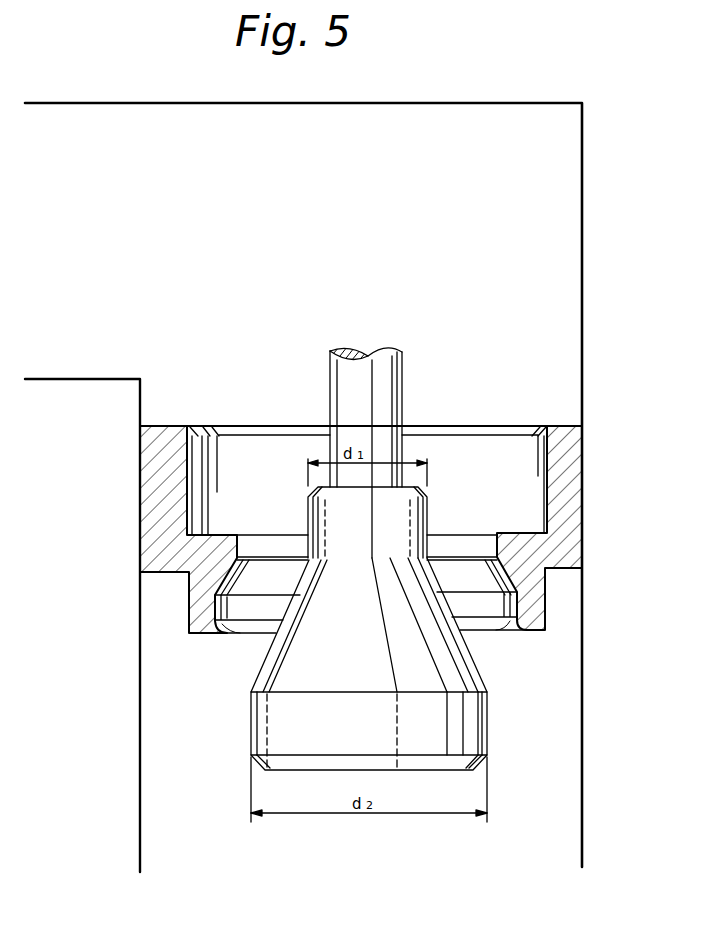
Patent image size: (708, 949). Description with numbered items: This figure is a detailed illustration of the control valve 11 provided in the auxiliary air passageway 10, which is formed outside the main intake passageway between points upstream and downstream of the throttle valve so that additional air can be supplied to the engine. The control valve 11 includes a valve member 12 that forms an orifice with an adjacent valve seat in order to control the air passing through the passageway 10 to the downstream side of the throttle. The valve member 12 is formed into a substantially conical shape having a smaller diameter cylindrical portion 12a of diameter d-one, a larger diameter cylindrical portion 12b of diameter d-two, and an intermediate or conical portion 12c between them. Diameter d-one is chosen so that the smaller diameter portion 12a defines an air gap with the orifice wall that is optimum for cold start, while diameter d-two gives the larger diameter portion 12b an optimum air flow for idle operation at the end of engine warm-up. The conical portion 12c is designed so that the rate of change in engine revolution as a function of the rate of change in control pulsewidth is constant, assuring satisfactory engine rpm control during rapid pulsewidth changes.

The auxiliary air passageway 10 is at (568, 823).
The control valve 11 is at (632, 431).
The valve member 12 is at (380, 558).
The smaller diameter cylindrical portion 12a is at (427, 521).
The larger diameter cylindrical portion 12b is at (487, 735).
The intermediate or conical portion 12c is at (386, 661).